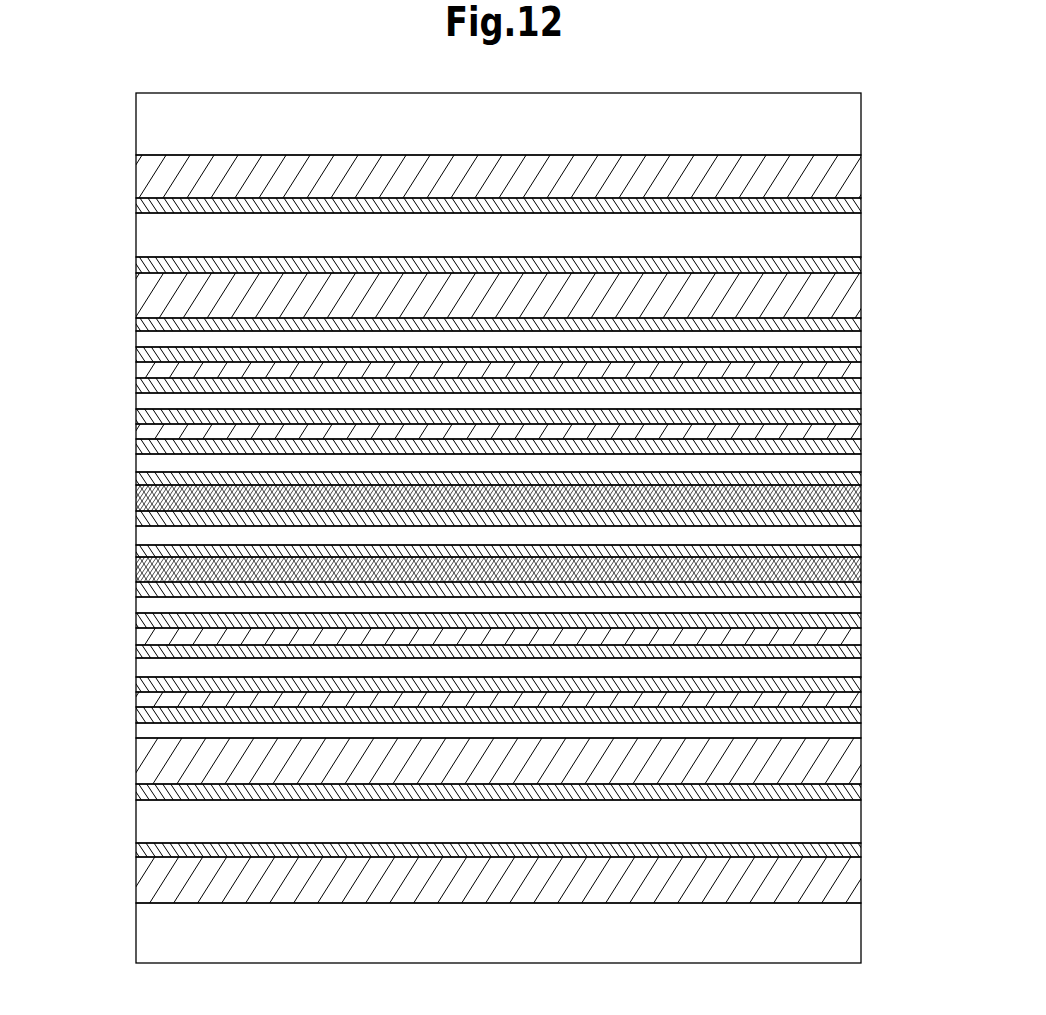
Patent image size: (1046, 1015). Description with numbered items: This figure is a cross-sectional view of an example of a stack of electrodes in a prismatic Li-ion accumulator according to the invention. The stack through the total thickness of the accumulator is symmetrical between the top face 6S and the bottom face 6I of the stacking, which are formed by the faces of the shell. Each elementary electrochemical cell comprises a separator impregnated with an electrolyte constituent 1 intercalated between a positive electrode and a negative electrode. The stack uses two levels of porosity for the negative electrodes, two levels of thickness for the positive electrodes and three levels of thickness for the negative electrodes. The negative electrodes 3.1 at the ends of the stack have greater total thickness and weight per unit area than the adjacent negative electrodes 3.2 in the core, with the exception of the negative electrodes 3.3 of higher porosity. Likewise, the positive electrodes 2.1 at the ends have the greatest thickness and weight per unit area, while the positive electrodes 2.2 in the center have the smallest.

The top face 6S is at (148, 120).
The bottom face 6I is at (150, 935).
The separator impregnated with an electrolyte constituent 1 is at (136, 352).
The negative electrode 3.1 is at (852, 178).
The positive electrode 2.1 is at (852, 240).
The positive electrode 2.2 is at (852, 333).
The negative electrode 3.2 is at (852, 368).
The negative electrode 3.3 is at (860, 503).